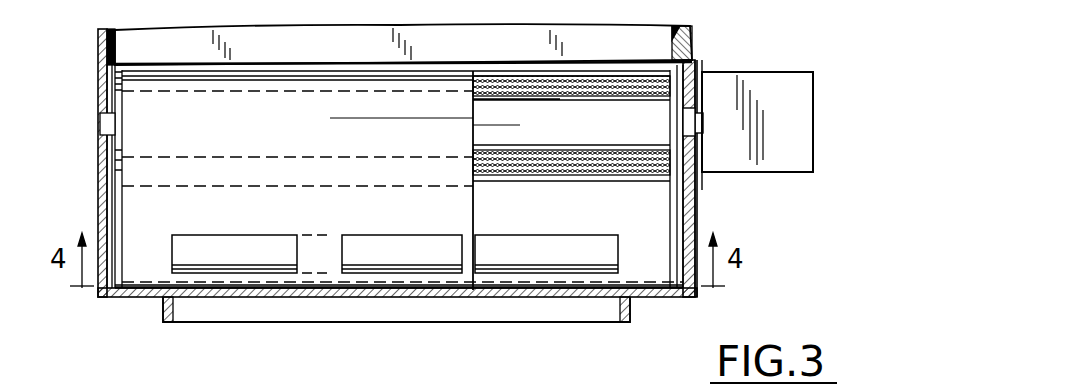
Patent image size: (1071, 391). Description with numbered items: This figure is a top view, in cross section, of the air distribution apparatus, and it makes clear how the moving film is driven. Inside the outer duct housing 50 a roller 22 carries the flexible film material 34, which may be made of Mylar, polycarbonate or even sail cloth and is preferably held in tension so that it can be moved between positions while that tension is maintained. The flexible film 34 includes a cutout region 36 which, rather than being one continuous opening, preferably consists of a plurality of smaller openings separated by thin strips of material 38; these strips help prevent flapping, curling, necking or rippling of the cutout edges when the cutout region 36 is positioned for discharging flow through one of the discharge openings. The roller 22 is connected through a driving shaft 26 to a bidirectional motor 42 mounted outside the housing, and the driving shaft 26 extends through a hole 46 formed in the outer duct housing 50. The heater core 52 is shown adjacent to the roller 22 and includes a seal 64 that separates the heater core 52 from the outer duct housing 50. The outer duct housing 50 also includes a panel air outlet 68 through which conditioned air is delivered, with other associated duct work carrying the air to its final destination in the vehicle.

The roller 22 is at (573, 106).
The driving shaft 26 is at (697, 116).
The flexible film material 34 is at (130, 104).
The cutout region 36 is at (166, 243).
The thin strips of material 38 is at (322, 258).
The bidirectional motor 42 is at (810, 120).
The hole 46 is at (690, 124).
The outer duct housing 50 is at (700, 207).
The heater core 52 is at (658, 30).
The seal 64 is at (100, 50).
The panel air outlet 68 is at (628, 300).